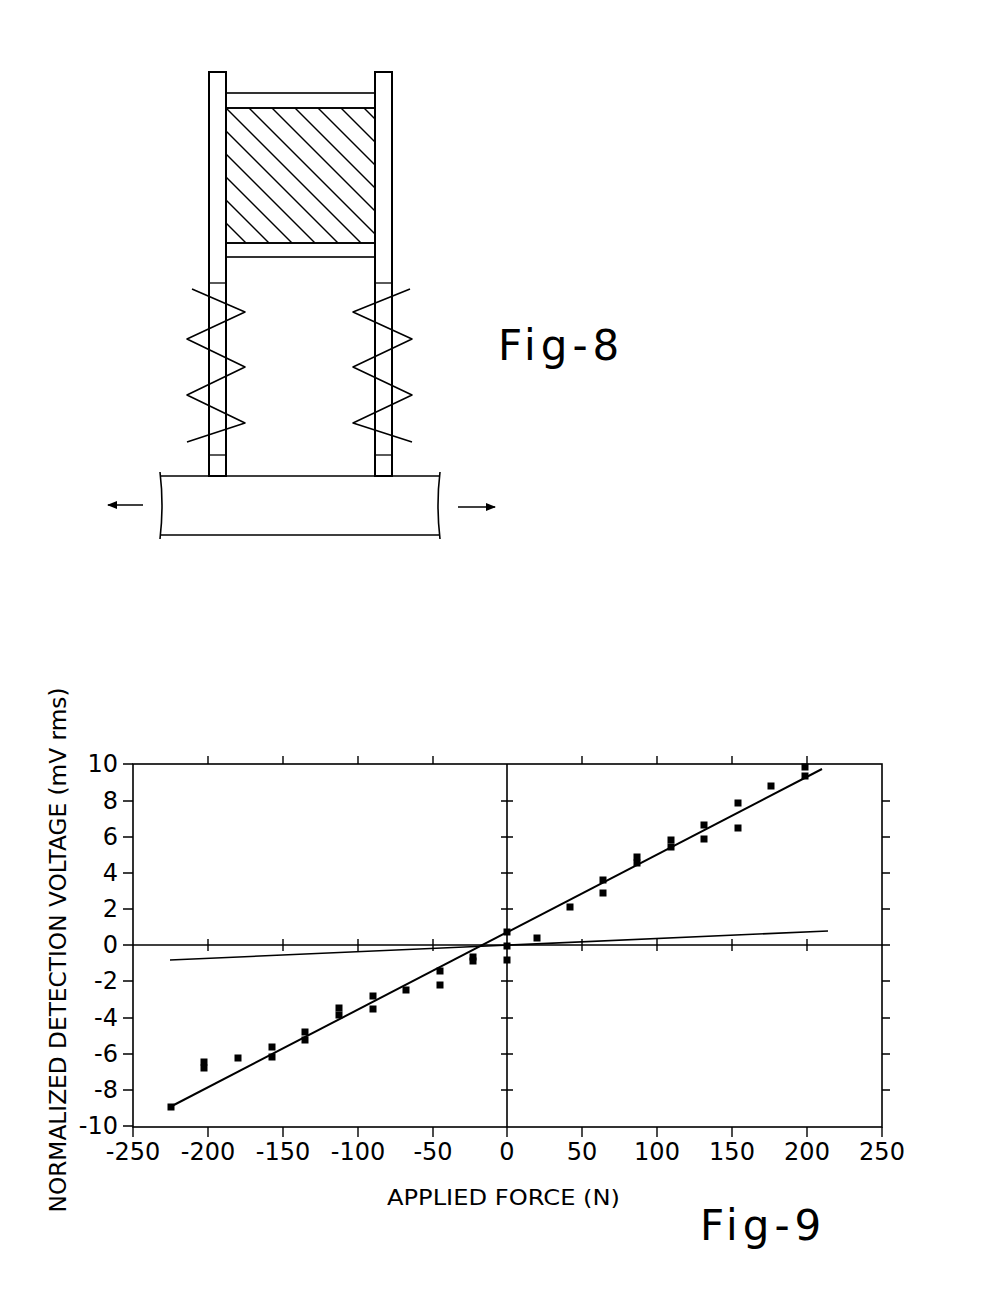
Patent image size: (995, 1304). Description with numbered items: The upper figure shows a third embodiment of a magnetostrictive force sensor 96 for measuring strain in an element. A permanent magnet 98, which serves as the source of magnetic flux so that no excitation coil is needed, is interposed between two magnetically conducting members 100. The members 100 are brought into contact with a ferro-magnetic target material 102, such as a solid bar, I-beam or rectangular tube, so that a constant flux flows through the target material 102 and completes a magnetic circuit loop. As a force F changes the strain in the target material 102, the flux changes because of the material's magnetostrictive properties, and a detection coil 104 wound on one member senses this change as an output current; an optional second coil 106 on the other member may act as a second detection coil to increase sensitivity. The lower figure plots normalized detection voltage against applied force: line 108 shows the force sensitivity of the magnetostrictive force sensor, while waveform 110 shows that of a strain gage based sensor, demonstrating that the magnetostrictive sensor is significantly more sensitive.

In FIG. 8, the magnetostrictive force sensor 96 is at (304, 276).
In FIG. 8, the permanent magnet 98 is at (352, 130).
In FIG. 8, the magnetically conducting members 100 is at (385, 220).
In FIG. 8, the ferro-magnetic target material 102 is at (263, 476).
In FIG. 8, the detection coil 104 is at (363, 305).
In FIG. 8, the second coil 106 is at (192, 397).
In FIG. 9, the line 108 is at (630, 866).
In FIG. 9, the waveform 110 is at (623, 940).